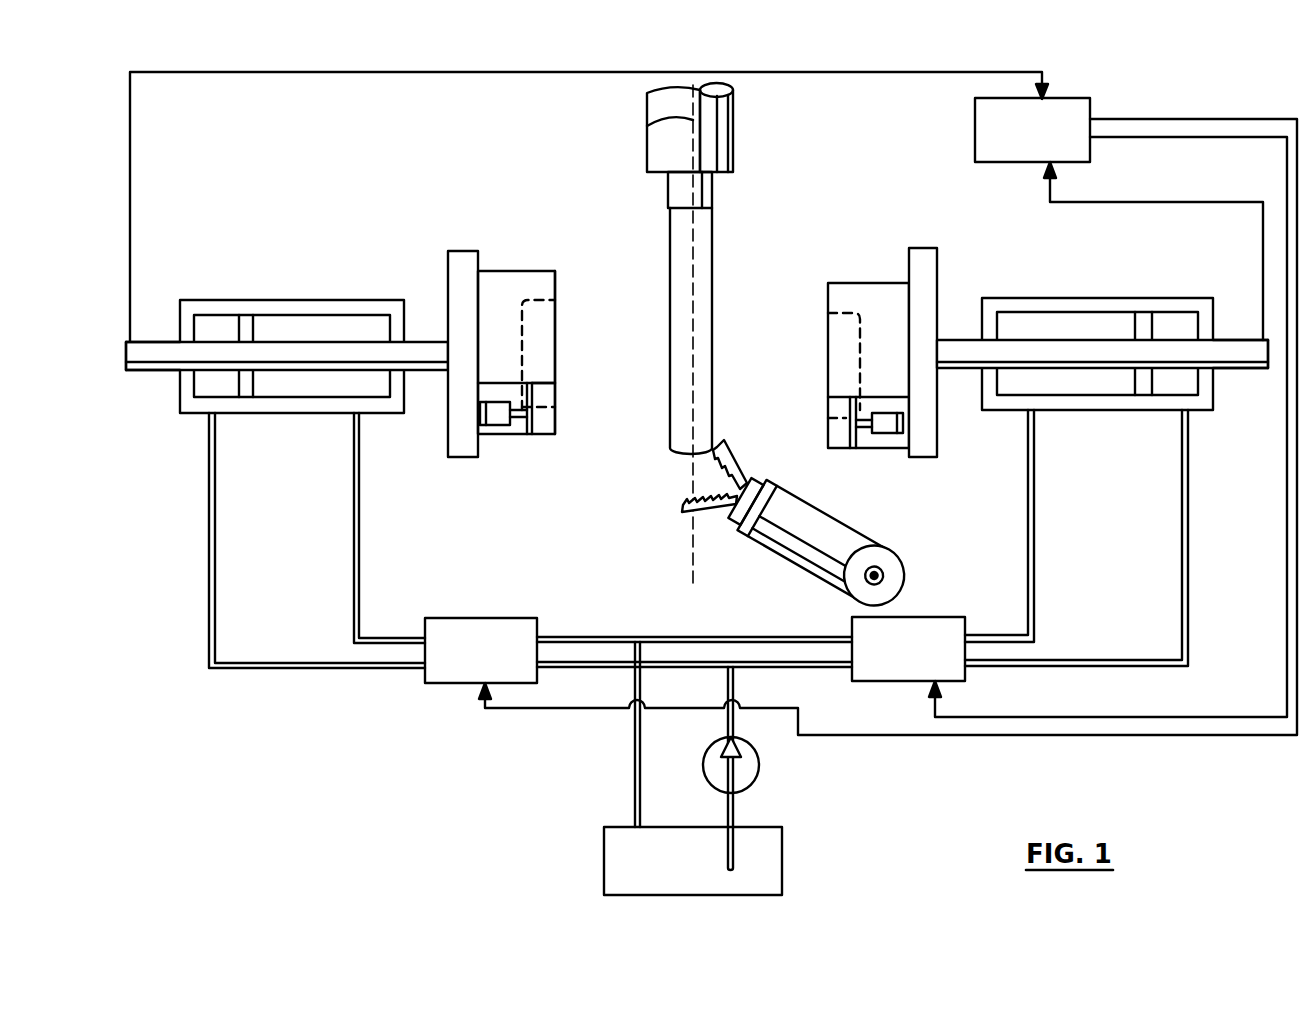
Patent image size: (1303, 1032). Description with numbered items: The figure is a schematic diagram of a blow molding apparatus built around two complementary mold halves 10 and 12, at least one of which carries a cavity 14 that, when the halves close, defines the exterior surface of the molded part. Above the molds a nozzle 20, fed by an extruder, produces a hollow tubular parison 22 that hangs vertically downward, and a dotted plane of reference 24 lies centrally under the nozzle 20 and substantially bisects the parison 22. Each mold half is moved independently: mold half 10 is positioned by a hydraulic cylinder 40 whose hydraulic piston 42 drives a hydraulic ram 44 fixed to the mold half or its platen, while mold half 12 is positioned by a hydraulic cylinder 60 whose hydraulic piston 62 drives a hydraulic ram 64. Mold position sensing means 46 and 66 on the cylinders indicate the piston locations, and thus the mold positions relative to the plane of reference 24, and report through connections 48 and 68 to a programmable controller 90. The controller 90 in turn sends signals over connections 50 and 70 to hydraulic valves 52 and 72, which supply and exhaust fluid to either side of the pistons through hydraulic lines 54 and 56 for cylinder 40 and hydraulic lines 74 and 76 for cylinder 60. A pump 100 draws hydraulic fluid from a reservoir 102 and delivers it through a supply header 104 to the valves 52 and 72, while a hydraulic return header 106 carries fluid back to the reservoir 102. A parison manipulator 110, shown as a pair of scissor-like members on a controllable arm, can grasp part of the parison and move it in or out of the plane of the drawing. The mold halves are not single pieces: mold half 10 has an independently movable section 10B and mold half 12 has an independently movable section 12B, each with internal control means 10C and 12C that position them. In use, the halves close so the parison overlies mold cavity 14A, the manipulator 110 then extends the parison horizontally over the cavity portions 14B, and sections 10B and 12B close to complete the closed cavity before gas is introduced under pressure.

The mold half 10 is at (558, 246).
The independently movable section 10B is at (530, 434).
The internal control means 10C is at (502, 428).
The mold half 12 is at (852, 265).
The independently movable section 12B is at (859, 447).
The internal control means 12C is at (903, 414).
The cavity 14 is at (548, 345).
The mold cavity 14A is at (551, 368).
The cavity portion 14B is at (548, 398).
The nozzle 20 is at (735, 137).
The parison 22 is at (713, 247).
The plane of reference 24 is at (691, 122).
The hydraulic cylinder 40 is at (340, 300).
The hydraulic piston 42 is at (258, 327).
The hydraulic ram 44 is at (327, 371).
The mold position sensing means 46 is at (153, 372).
The connection 48 is at (130, 101).
The connection 50 is at (1214, 119).
The hydraulic valve 52 is at (488, 618).
The hydraulic line 54 is at (361, 537).
The hydraulic line 56 is at (215, 537).
The hydraulic cylinder 60 is at (1042, 298).
The hydraulic piston 62 is at (1126, 322).
The hydraulic ram 64 is at (1070, 364).
The mold position sensing means 66 is at (1238, 370).
The connection 68 is at (1138, 202).
The connection 70 is at (1253, 139).
The hydraulic valve 72 is at (930, 617).
The hydraulic line 74 is at (1028, 488).
The hydraulic line 76 is at (1182, 490).
The programmable controller 90 is at (1076, 98).
The pump 100 is at (760, 766).
The reservoir 102 is at (782, 862).
The supply header 104 is at (788, 668).
The hydraulic return header 106 is at (703, 637).
The parison manipulator 110 is at (812, 494).